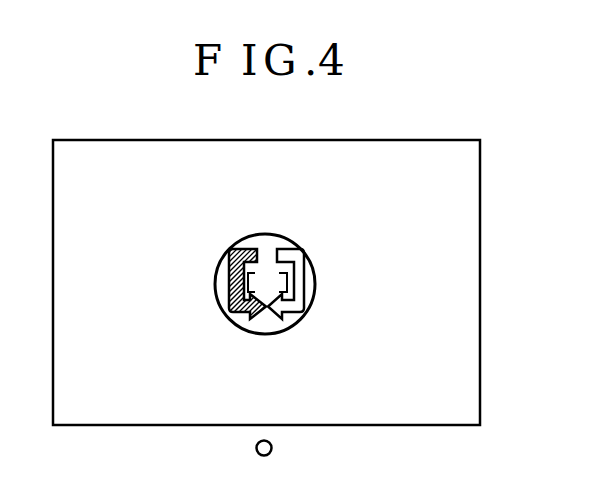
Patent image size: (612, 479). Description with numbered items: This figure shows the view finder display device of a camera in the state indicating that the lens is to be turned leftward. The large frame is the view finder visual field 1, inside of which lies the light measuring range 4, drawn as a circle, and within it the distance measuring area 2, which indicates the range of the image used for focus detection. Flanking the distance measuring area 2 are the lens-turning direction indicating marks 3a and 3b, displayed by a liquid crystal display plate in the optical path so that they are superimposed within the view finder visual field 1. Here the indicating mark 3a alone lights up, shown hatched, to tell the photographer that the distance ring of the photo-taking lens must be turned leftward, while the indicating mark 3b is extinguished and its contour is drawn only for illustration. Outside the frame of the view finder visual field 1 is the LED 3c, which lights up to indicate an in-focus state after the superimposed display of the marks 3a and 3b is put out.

The view finder visual field 1 is at (366, 140).
The distance measuring area 2 is at (287, 282).
The lens-turning direction indicating mark 3a is at (243, 251).
The lens-turning direction indicating mark 3b is at (280, 249).
The LED 3c is at (272, 448).
The light measuring range 4 is at (306, 251).